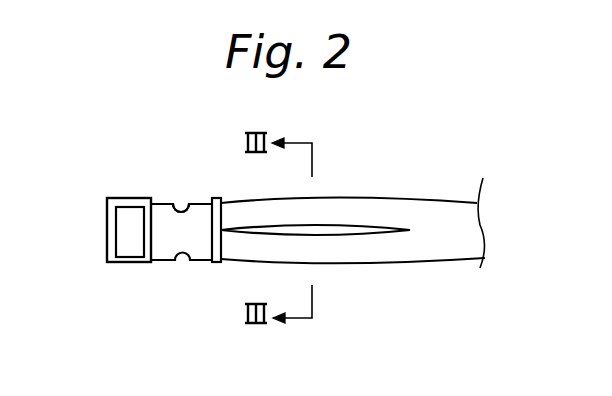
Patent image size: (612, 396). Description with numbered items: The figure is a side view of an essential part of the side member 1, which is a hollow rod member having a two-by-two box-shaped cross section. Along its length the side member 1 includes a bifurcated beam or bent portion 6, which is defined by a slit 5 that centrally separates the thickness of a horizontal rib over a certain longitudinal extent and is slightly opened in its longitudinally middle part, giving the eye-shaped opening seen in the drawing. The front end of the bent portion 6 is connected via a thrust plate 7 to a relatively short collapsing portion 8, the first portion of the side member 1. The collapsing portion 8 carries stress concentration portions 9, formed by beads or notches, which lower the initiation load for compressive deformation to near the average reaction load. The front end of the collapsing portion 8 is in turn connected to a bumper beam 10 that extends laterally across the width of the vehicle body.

The side member 1 is at (420, 170).
The slit 5 is at (323, 233).
The bent portion 6 is at (367, 213).
The thrust plate 7 is at (217, 263).
The collapsing portion 8 is at (165, 245).
The stress concentration portions 9 is at (183, 202).
The bumper beam 10 is at (128, 198).